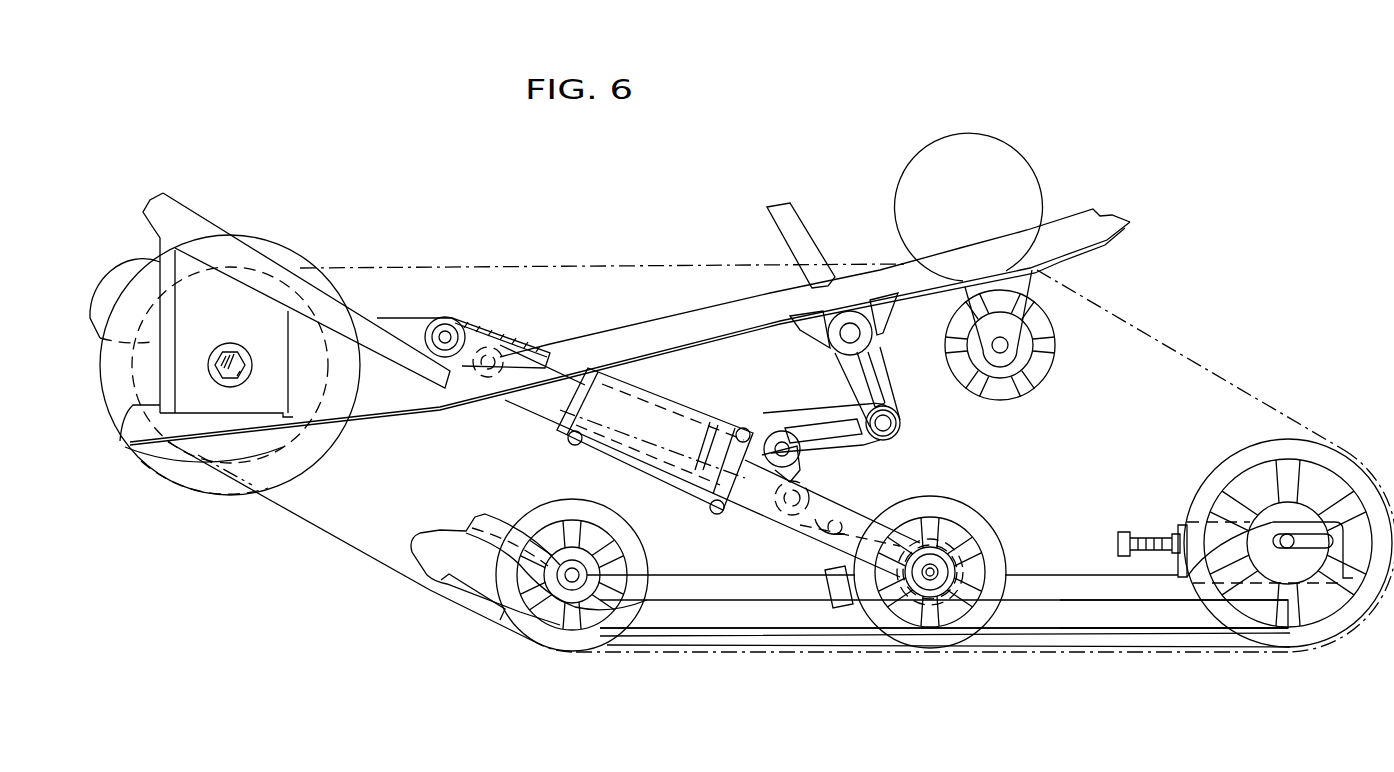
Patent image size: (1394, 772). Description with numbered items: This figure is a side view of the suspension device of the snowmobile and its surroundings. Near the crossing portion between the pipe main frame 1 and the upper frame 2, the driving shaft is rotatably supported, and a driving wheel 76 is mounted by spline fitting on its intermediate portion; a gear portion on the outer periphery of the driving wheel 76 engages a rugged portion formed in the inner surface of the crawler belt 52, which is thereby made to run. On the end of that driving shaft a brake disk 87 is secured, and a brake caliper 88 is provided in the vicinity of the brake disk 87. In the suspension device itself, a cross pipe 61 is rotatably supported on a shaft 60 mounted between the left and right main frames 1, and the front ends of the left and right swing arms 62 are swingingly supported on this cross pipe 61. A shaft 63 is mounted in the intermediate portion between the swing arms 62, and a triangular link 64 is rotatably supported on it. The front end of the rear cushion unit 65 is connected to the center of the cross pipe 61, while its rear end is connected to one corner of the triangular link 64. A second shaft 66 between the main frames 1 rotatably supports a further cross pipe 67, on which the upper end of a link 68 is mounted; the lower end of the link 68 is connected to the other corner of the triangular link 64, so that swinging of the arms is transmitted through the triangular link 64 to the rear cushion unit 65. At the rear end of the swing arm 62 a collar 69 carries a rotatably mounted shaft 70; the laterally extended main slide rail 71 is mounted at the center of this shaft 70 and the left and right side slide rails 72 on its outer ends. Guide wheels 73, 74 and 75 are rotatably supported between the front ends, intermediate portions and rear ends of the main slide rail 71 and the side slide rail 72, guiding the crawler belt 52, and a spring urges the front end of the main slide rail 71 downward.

The main frame 1 is at (154, 440).
The upper frame 2 is at (213, 253).
The crawler belt 52 is at (340, 543).
The shaft 60 is at (445, 330).
The cross pipe 61 is at (430, 325).
The swing arm 62 is at (770, 512).
The shaft 63 is at (767, 445).
The triangular link 64 is at (823, 428).
The rear cushion unit 65 is at (650, 430).
The shaft 66 is at (850, 325).
The cross pipe 67 is at (867, 290).
The link 68 is at (890, 395).
The collar 69 is at (950, 558).
The shaft 70 is at (930, 582).
The main slide rail 71 is at (1055, 632).
The side slide rail 72 is at (1143, 598).
The guide wheel 73 is at (513, 607).
The guide wheel 74 is at (947, 640).
The guide wheel 75 is at (1317, 635).
The driving wheel 76 is at (263, 457).
The brake disk 87 is at (193, 475).
The brake caliper 88 is at (100, 292).